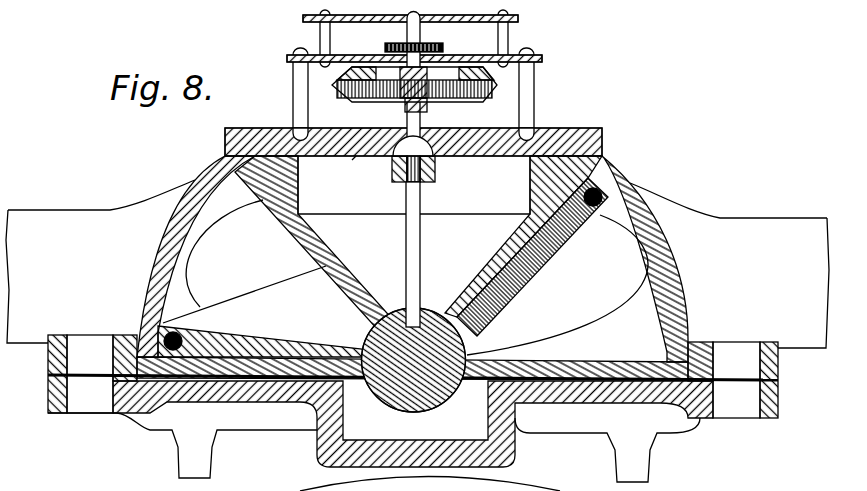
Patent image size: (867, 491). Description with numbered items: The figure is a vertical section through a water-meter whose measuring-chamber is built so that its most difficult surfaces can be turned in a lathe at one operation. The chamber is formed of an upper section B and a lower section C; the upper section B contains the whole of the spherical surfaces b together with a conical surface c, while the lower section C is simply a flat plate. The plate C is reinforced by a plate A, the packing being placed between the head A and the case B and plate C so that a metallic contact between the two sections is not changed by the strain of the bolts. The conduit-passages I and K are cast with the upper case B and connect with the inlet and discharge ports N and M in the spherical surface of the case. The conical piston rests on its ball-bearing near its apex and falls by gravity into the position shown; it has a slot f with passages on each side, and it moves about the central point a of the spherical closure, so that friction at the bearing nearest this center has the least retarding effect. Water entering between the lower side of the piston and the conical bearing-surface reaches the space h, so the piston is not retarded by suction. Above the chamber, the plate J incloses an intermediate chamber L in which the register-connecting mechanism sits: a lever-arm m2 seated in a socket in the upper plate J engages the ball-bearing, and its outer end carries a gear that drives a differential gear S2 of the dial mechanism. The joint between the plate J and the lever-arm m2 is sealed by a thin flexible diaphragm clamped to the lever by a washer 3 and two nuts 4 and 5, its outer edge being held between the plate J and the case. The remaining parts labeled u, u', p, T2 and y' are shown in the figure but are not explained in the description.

The upper plate J is at (413, 130).
The differential gear S2 is at (458, 77).
The gear hub and pinion T2 is at (427, 80).
The space h is at (413, 146).
The slot f is at (356, 165).
The washer 3 is at (436, 160).
The nut 4 is at (436, 172).
The nut 5 is at (430, 180).
The intermediate chamber L is at (414, 185).
The conical surface c is at (244, 294).
The lever-arm m2 is at (423, 254).
The spherical surfaces b is at (423, 277).
The upper section B is at (411, 259).
The conduit-passage K is at (100, 261).
The conduit-passage I is at (729, 265).
The discharge port M is at (295, 243).
The inlet port N is at (526, 246).
The bearing block u' is at (418, 347).
The base line u is at (412, 376).
The central point a is at (414, 360).
The wedge piece p is at (283, 362).
The lower section C is at (413, 424).
The lower head plate A is at (374, 447).
The arc y' is at (430, 481).